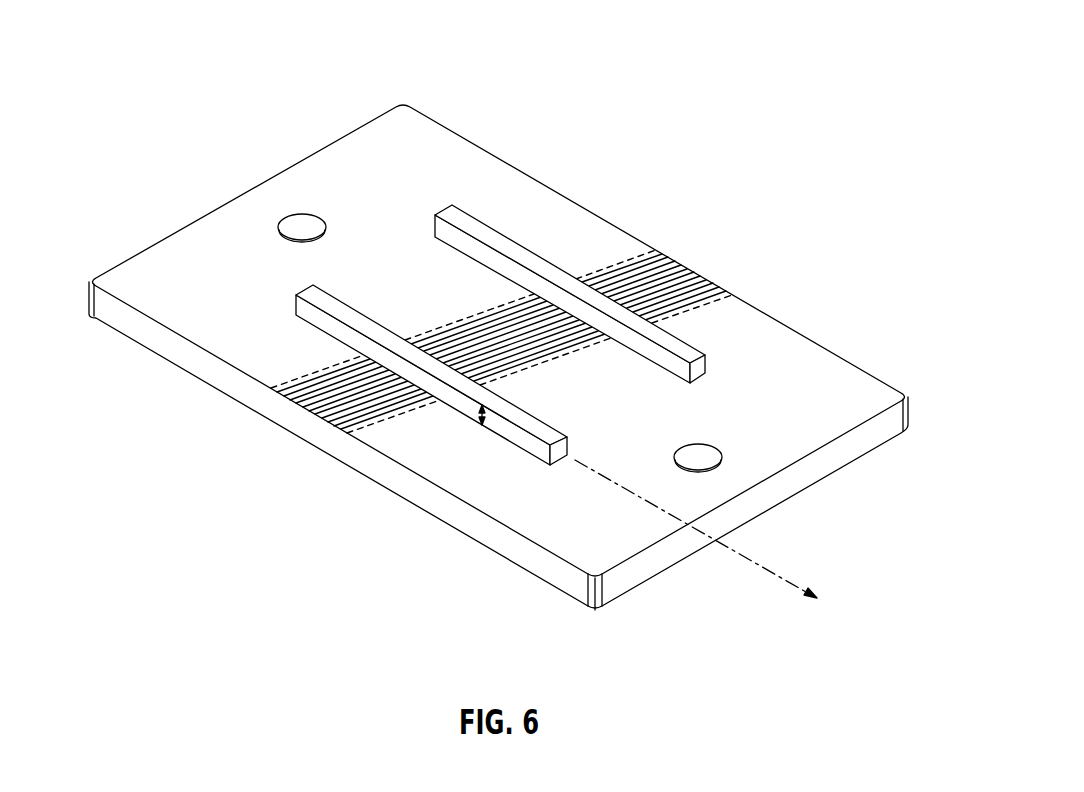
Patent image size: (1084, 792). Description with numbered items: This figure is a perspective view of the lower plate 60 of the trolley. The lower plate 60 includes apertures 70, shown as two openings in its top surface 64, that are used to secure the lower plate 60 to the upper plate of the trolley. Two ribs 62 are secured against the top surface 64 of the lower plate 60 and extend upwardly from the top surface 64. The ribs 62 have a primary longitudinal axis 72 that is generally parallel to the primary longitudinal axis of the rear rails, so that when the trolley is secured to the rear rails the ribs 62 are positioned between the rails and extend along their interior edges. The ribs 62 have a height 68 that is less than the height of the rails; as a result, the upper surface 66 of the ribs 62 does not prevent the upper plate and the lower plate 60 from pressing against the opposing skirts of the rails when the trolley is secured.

The lower plate 60 is at (498, 342).
The ribs 62 is at (458, 321).
The top surface 64 is at (794, 366).
The upper surface 66 is at (505, 236).
The height 68 is at (464, 418).
The apertures 70 is at (682, 284).
The primary longitudinal axis 72 is at (769, 569).